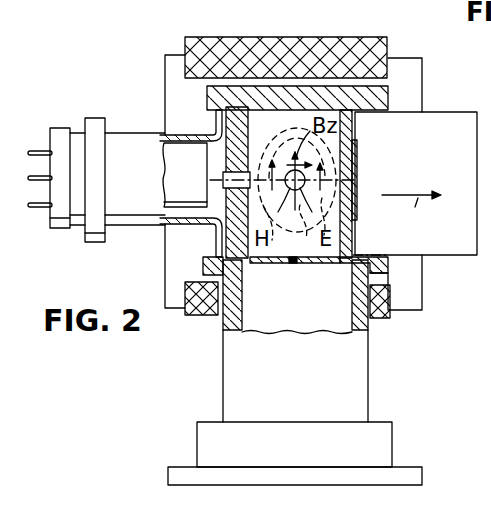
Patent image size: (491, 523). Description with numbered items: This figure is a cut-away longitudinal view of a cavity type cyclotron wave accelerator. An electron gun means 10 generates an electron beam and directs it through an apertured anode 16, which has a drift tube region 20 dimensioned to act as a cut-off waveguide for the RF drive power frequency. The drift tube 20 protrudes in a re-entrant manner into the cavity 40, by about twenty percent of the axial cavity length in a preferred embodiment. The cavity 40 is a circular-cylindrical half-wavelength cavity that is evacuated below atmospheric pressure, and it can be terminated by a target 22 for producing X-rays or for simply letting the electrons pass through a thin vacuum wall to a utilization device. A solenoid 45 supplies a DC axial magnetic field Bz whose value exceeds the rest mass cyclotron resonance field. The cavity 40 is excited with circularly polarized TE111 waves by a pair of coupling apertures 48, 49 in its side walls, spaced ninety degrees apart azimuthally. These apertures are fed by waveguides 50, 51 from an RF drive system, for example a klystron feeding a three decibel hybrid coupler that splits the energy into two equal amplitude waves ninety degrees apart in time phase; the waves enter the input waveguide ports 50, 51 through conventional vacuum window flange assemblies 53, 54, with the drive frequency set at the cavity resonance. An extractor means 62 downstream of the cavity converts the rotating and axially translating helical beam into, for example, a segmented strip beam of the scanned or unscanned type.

The electron gun means 10 is at (103, 255).
The apertured anode 16 is at (232, 166).
The drift tube region 20 is at (214, 216).
The target 22 is at (356, 150).
The cavity 40 is at (258, 130).
The solenoid 45 is at (230, 40).
The coupling aperture 48 is at (294, 202).
The coupling aperture 49 is at (293, 263).
The waveguide 50 is at (250, 357).
The waveguide 51 is at (268, 137).
The vacuum window flange assembly 53 is at (210, 441).
The vacuum window flange assembly 54 is at (422, 284).
The extractor means 62 is at (453, 117).